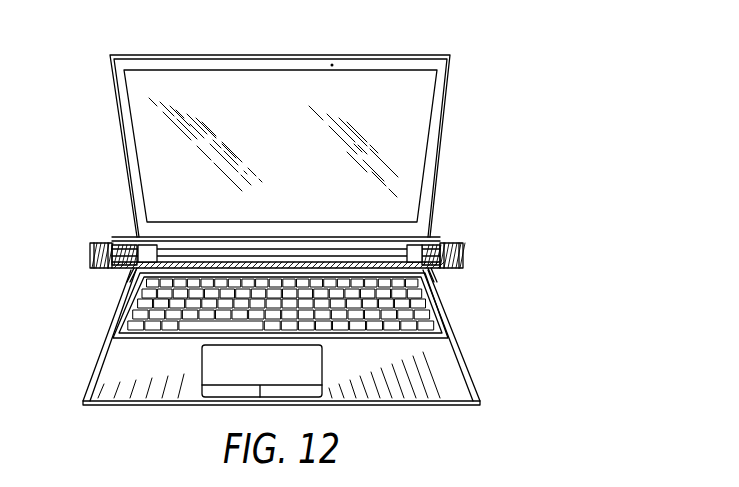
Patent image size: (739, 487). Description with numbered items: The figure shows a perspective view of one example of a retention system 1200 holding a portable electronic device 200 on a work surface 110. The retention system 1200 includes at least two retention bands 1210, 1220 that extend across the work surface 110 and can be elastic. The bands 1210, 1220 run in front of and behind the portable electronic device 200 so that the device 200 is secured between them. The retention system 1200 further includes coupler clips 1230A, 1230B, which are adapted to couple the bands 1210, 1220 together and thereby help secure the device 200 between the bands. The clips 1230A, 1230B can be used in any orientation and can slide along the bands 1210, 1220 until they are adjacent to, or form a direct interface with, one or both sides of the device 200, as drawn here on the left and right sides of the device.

The retention system 1200 is at (498, 198).
The portable electronic device 200 is at (283, 57).
The work surface 110 is at (487, 376).
The retention band 1210 is at (460, 243).
The retention band 1220 is at (460, 266).
The coupler clip 1230A is at (113, 253).
The coupler clip 1230B is at (446, 245).